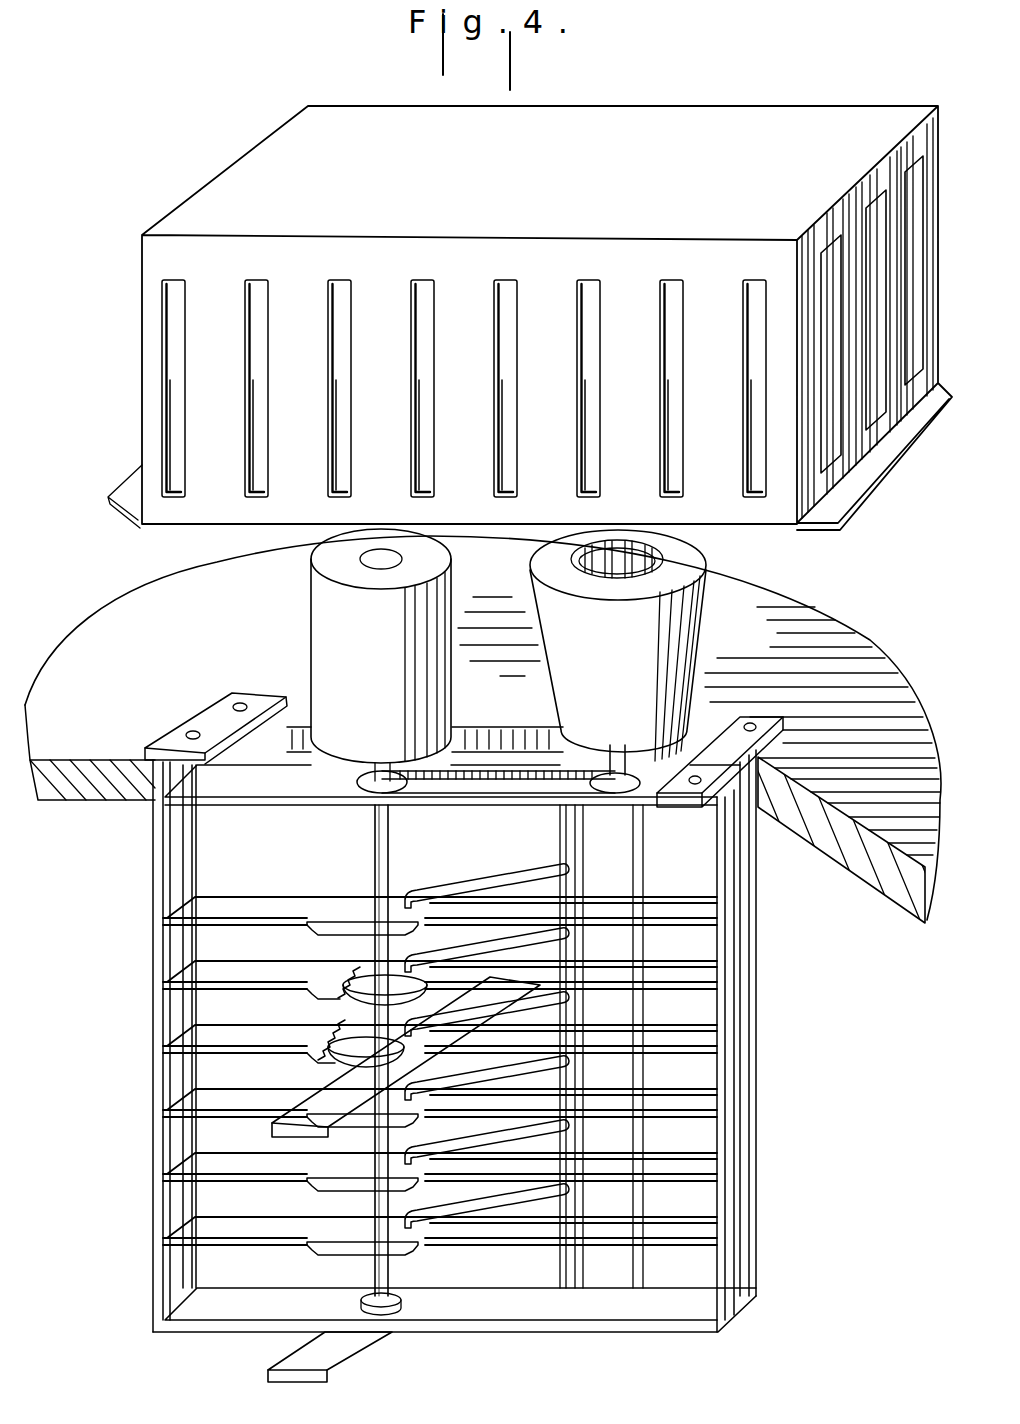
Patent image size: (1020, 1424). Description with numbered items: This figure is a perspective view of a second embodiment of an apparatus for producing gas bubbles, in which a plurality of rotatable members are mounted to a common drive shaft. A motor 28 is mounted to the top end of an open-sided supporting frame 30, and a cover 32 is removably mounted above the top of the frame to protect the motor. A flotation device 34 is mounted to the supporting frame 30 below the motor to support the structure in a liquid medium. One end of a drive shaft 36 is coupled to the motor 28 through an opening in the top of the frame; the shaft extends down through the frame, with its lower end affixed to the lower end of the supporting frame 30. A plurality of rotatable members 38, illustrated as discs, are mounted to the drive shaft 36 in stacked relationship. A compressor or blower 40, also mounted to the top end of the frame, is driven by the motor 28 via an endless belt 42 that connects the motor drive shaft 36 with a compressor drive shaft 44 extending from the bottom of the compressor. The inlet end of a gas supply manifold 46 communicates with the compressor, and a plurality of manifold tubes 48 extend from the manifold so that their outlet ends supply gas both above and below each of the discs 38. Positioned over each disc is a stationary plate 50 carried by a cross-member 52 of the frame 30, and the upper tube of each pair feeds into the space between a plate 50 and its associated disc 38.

The cover 32 is at (684, 105).
The flotation device 34 is at (865, 658).
The motor 28 is at (325, 615).
The compressor or blower 40 is at (698, 628).
The compressor drive shaft 44 is at (617, 758).
The endless belt 42 is at (462, 798).
The gas supply manifold 46 is at (562, 834).
The supporting frame 30 is at (740, 1040).
The drive shaft 36 is at (380, 842).
The cross-member 52 is at (264, 970).
The stationary plate 50 is at (332, 920).
The rotatable members 38 is at (350, 998).
The manifold tubes 48 is at (430, 955).